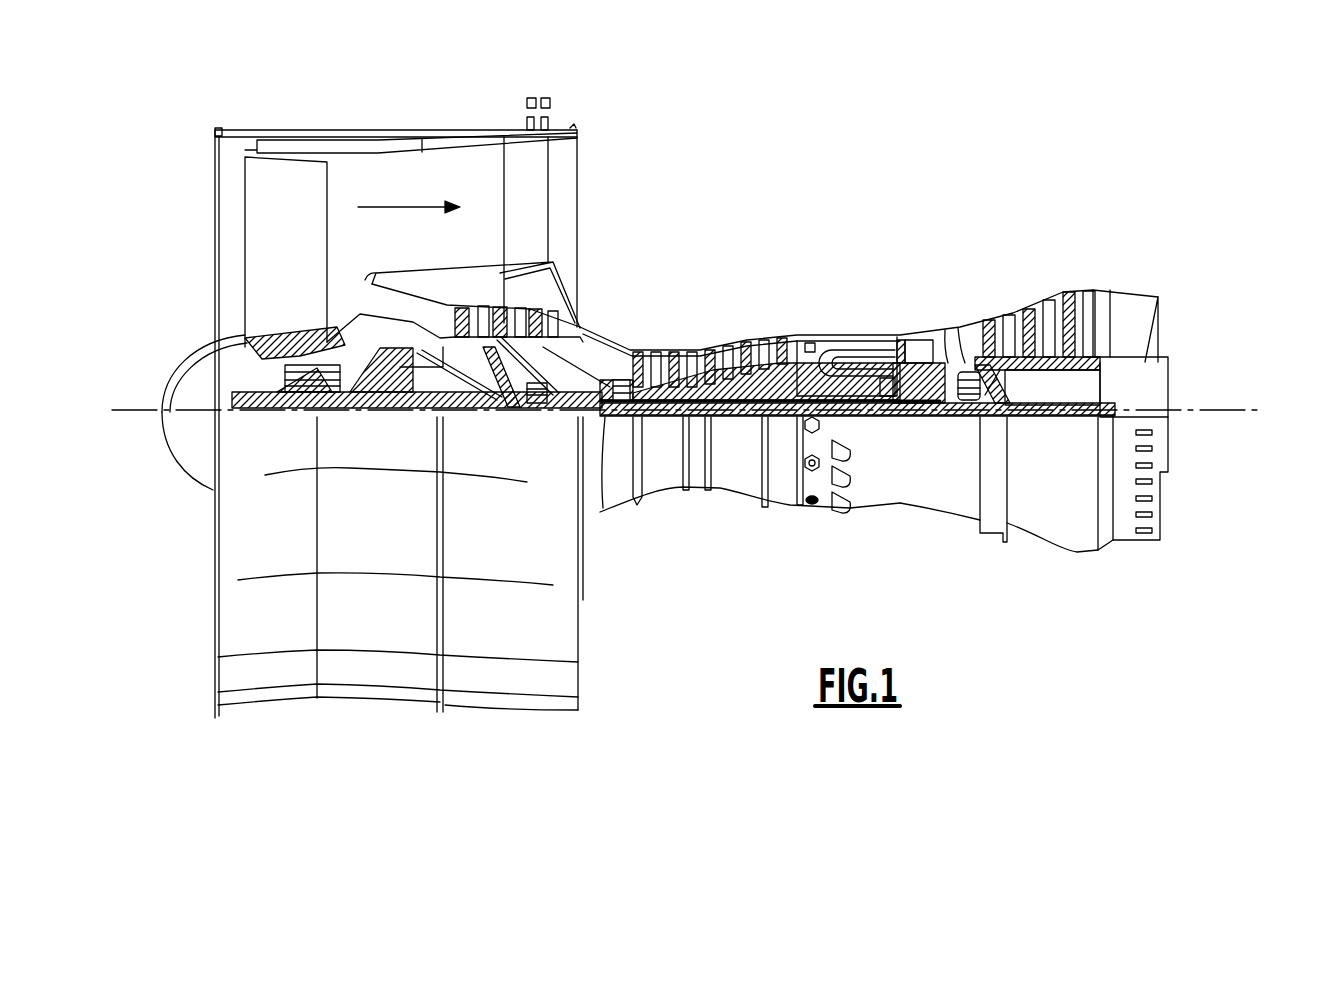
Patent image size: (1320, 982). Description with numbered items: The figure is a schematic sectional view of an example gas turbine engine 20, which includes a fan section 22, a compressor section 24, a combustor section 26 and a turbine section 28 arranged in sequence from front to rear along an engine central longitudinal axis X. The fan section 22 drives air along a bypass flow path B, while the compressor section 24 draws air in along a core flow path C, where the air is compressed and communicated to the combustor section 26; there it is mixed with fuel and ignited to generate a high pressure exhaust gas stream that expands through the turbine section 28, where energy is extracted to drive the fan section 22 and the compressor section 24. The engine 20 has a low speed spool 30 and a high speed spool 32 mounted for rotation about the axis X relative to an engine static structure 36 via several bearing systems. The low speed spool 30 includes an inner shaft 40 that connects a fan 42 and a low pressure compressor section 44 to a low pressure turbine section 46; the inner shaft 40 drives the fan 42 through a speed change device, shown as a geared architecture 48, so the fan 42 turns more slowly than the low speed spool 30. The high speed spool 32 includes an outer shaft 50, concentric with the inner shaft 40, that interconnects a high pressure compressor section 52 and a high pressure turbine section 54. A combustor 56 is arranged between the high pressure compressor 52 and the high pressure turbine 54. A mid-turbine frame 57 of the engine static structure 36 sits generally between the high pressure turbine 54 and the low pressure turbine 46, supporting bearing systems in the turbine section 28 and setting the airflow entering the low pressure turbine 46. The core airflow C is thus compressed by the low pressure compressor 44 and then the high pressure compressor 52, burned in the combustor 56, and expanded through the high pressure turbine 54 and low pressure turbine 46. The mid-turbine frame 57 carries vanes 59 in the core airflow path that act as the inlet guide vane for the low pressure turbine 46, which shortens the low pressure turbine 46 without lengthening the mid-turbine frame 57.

The gas turbine engine 20 is at (860, 178).
The fan section 22 is at (425, 108).
The compressor section 24 is at (440, 254).
The combustor section 26 is at (890, 254).
The turbine section 28 is at (900, 254).
The low speed spool 30 is at (737, 428).
The high speed spool 32 is at (780, 360).
The engine static structure 36 is at (777, 512).
The inner shaft 40 is at (603, 500).
The fan 42 is at (300, 264).
The low pressure compressor section 44 is at (513, 317).
The low pressure turbine section 46 is at (1045, 310).
The geared architecture 48 is at (405, 400).
The outer shaft 50 is at (860, 420).
The high pressure compressor section 52 is at (710, 385).
The high pressure turbine section 54 is at (917, 340).
The combustor 56 is at (850, 355).
The mid-turbine frame 57 is at (962, 326).
The vanes 59 is at (990, 403).
The bypass flow path B is at (398, 206).
The core flow path C is at (395, 311).
The engine central longitudinal axis X is at (1232, 410).